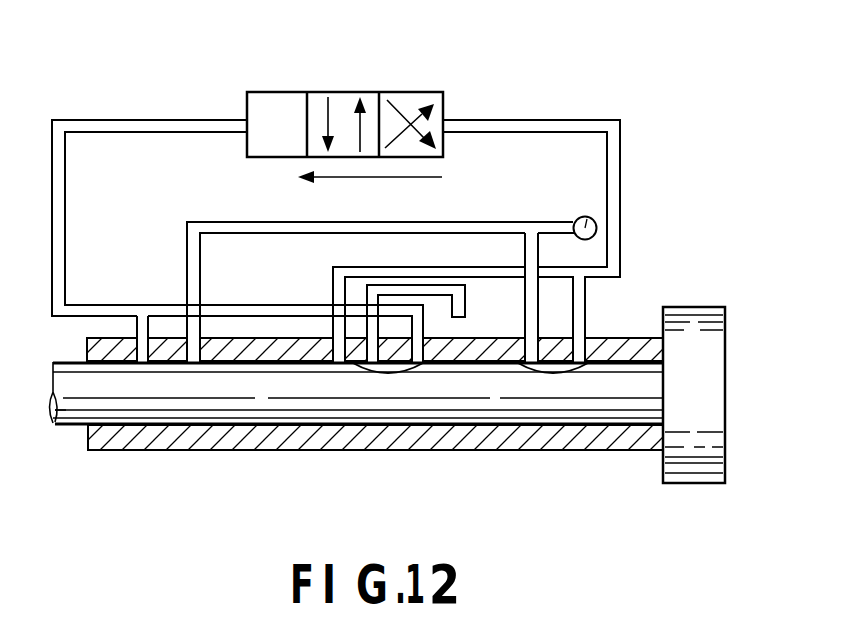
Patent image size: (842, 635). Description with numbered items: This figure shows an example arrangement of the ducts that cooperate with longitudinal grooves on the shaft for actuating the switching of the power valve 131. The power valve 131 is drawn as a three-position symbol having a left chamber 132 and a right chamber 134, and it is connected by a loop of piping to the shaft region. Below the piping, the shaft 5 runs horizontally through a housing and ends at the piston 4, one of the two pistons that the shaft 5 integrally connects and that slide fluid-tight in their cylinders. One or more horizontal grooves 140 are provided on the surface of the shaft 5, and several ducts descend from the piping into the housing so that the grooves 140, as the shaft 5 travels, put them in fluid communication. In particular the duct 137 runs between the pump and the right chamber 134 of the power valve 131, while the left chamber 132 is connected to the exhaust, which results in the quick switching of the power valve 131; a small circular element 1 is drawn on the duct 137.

The power valve 131 is at (337, 93).
The left chamber 132 is at (262, 108).
The right chamber 134 is at (443, 90).
The duct 137 is at (521, 224).
The pressure gauge 1 is at (597, 228).
The shaft 5 is at (74, 392).
The piston 4 is at (703, 457).
The horizontal grooves 140 is at (390, 372).